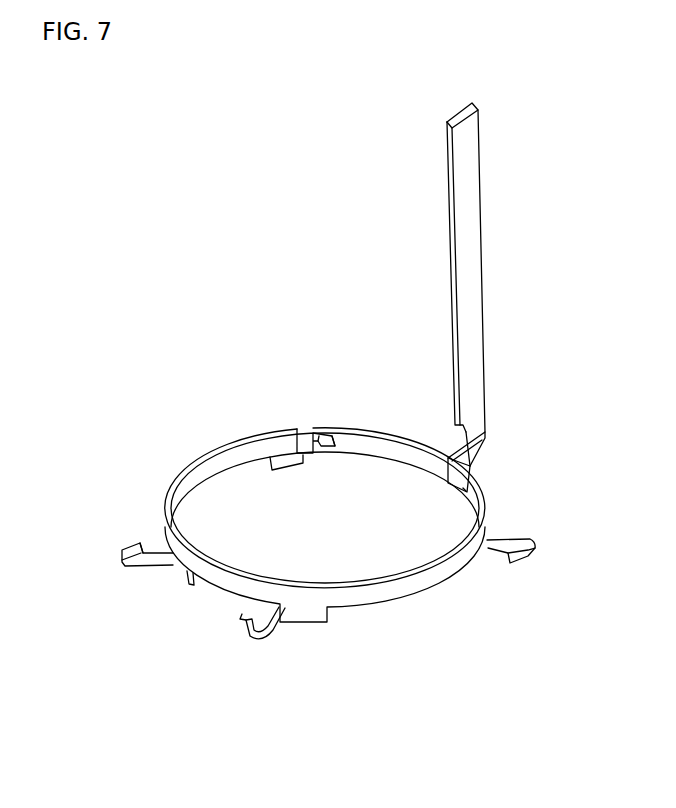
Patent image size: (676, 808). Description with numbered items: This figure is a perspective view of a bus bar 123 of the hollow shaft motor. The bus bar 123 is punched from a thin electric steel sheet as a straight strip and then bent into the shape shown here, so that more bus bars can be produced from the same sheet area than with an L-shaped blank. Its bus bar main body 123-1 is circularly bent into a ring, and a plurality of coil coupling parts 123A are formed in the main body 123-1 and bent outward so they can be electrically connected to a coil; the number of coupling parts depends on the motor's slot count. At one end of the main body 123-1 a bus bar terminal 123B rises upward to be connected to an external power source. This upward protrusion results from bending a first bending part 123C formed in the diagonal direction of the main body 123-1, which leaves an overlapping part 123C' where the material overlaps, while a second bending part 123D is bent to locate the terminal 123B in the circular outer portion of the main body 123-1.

The bus bar 123 is at (236, 408).
The bus bar main body 123-1 is at (205, 458).
The coil coupling parts 123A is at (328, 430).
The bus bar terminal 123B is at (477, 246).
The overlapping part 123C' is at (510, 442).
The first bending part 123C is at (511, 458).
The second bending part 123D is at (446, 464).